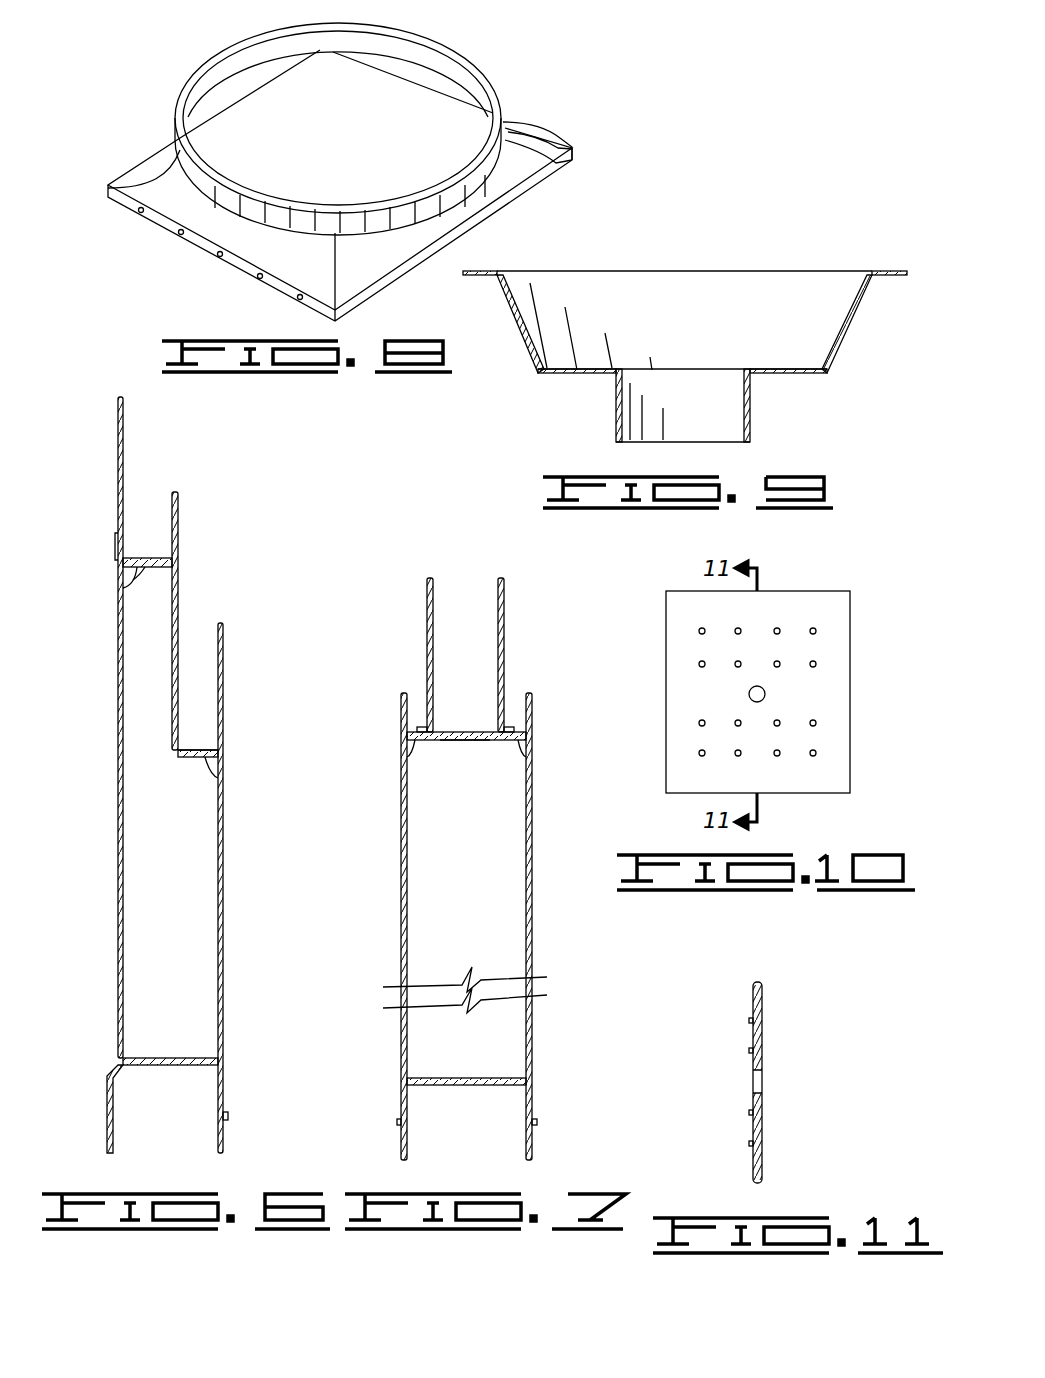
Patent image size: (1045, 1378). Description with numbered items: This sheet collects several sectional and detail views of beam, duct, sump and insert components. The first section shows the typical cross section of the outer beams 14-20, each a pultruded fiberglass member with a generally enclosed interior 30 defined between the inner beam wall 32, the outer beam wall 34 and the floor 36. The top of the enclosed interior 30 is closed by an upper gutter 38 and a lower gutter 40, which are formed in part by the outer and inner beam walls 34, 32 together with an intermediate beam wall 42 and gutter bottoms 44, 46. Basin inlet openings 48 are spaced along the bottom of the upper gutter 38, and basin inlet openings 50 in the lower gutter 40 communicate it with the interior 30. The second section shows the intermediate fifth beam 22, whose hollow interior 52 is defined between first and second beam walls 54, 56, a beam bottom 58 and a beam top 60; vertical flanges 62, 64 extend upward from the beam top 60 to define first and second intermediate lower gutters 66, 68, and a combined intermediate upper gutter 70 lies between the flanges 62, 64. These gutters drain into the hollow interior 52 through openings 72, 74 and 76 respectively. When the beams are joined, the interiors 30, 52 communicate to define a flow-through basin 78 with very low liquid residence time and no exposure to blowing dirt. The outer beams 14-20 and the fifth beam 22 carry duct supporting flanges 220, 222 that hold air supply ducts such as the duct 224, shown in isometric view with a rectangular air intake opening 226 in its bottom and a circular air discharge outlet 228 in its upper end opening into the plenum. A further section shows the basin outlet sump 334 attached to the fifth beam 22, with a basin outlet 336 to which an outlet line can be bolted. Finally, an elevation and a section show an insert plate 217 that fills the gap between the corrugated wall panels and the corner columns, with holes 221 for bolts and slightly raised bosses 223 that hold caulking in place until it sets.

In FIG. 8, the air supply duct 224 is at (532, 70).
In FIG. 8, the rectangular air intake opening 226 is at (241, 116).
In FIG. 8, the circular air discharge outlet 228 is at (290, 48).
In FIG. 9, the basin outlet sump 334 is at (853, 313).
In FIG. 9, the basin outlet 336 is at (652, 446).
In FIG. 6, the outer beams 14-20 is at (214, 548).
In FIG. 6, the enclosed interior 30 is at (181, 890).
In FIG. 6, the inner beam wall 32 is at (223, 875).
In FIG. 6, the outer beam wall 34 is at (118, 855).
In FIG. 6, the floor 36 is at (158, 1066).
In FIG. 6, the upper gutter 38 is at (151, 532).
In FIG. 6, the lower gutter 40 is at (203, 722).
In FIG. 6, the intermediate beam wall 42 is at (178, 615).
In FIG. 6, the gutter bottom 44 is at (133, 580).
In FIG. 6, the gutter bottom 46 is at (222, 780).
In FIG. 6, the basin inlet openings 48 is at (148, 567).
In FIG. 6, the basin inlet openings 50 is at (200, 757).
In FIG. 6, the basin 78 is at (181, 939).
In FIG. 7, the basin 78 is at (473, 895).
In FIG. 6, the duct supporting flange 220 is at (225, 1113).
In FIG. 7, the intermediate fifth beam 22 is at (521, 582).
In FIG. 7, the hollow interior 52 is at (473, 855).
In FIG. 7, the first beam wall 54 is at (401, 920).
In FIG. 7, the second beam wall 56 is at (532, 928).
In FIG. 7, the beam bottom 58 is at (478, 1086).
In FIG. 7, the beam top 60 is at (488, 742).
In FIG. 7, the vertical flange 62 is at (427, 622).
In FIG. 7, the vertical flange 64 is at (504, 626).
In FIG. 7, the first intermediate lower gutter 66 is at (419, 710).
In FIG. 7, the second intermediate lower gutter 68 is at (509, 711).
In FIG. 7, the combined intermediate upper gutter 70 is at (481, 664).
In FIG. 7, the opening 72 is at (412, 748).
In FIG. 7, the opening 74 is at (520, 748).
In FIG. 7, the opening 76 is at (463, 742).
In FIG. 7, the duct supporting flange 222 is at (537, 1120).
In FIG. 10, the insert plate 217 is at (855, 742).
In FIG. 11, the insert plate 217 is at (785, 1043).
In FIG. 10, the hole 221 is at (765, 692).
In FIG. 11, the hole 221 is at (762, 1083).
In FIG. 11, the raised boss 223 is at (750, 1050).